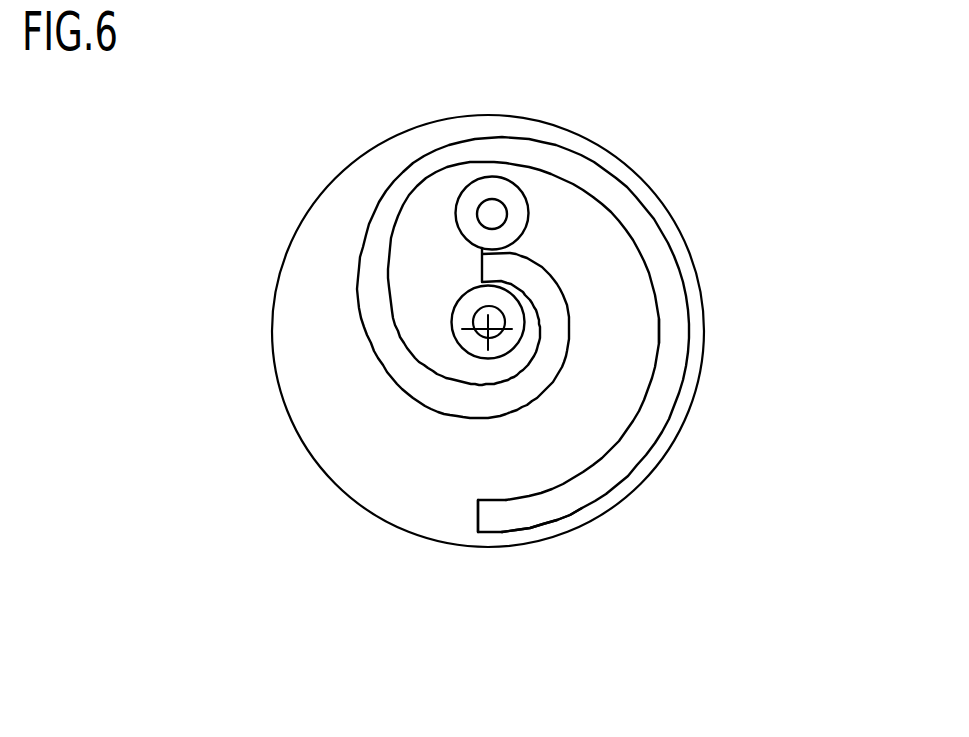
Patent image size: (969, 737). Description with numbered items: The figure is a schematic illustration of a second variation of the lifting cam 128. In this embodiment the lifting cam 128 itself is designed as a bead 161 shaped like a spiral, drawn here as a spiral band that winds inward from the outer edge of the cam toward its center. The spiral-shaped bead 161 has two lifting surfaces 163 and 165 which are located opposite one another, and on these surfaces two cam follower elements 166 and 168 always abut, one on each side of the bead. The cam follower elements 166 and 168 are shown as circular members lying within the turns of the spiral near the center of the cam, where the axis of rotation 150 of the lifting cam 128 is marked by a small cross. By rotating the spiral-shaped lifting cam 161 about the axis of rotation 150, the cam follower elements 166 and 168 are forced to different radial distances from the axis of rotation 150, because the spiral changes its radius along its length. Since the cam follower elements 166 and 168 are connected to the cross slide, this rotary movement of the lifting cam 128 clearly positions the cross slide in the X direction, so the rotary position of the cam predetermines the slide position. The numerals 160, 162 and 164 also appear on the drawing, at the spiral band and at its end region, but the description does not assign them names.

The lifting cam 128 is at (676, 186).
The axis of rotation 150 is at (488, 331).
The spiral fluid channel 160 is at (675, 268).
The bead shaped like a spiral 161 is at (742, 278).
The channel end tab 162 is at (505, 499).
The lifting surface 163 is at (434, 606).
The channel outer wall end 164 is at (508, 533).
The lifting surface 165 is at (579, 610).
The cam follower element 166 is at (458, 300).
The cam follower element 168 is at (466, 206).